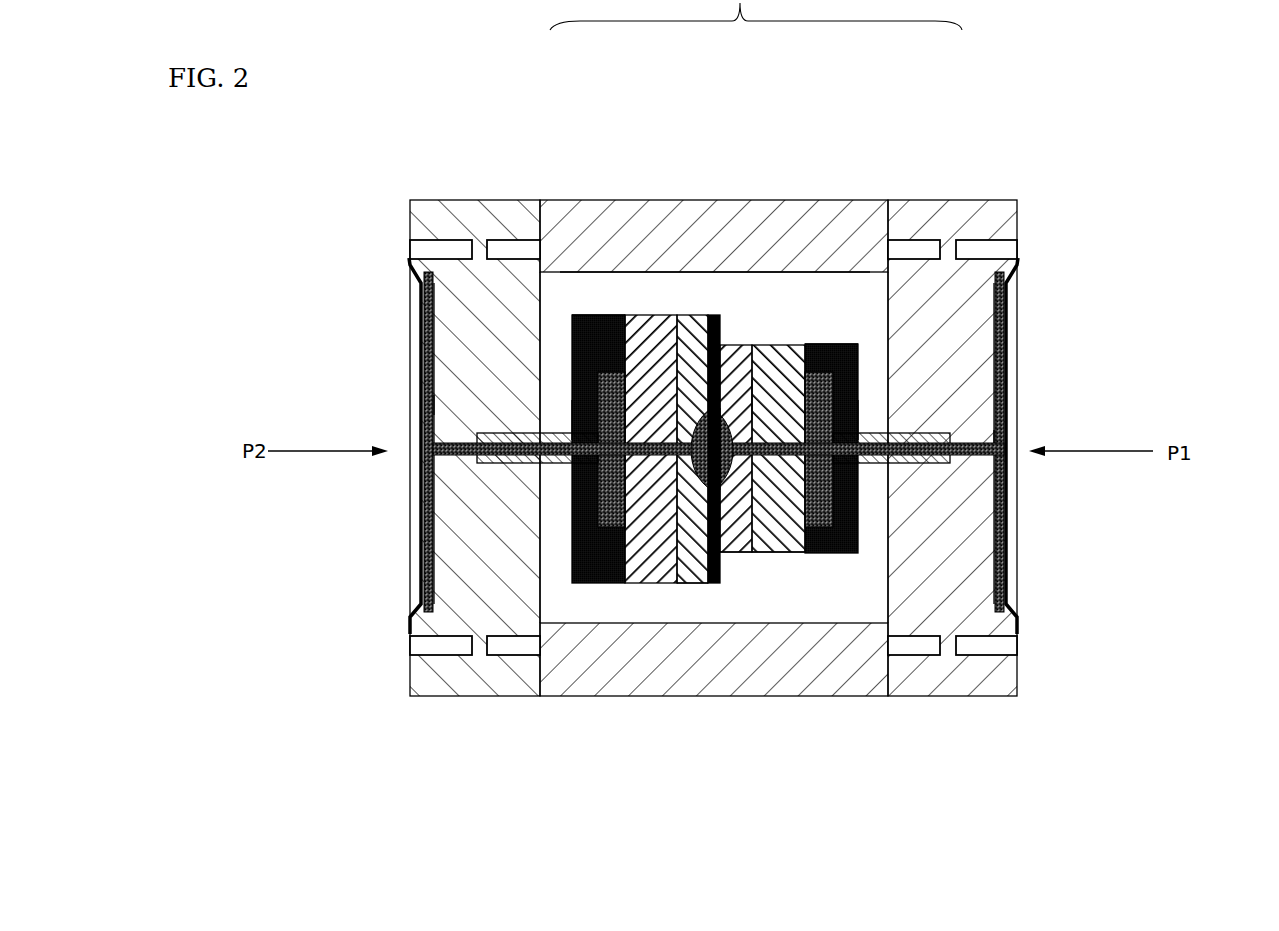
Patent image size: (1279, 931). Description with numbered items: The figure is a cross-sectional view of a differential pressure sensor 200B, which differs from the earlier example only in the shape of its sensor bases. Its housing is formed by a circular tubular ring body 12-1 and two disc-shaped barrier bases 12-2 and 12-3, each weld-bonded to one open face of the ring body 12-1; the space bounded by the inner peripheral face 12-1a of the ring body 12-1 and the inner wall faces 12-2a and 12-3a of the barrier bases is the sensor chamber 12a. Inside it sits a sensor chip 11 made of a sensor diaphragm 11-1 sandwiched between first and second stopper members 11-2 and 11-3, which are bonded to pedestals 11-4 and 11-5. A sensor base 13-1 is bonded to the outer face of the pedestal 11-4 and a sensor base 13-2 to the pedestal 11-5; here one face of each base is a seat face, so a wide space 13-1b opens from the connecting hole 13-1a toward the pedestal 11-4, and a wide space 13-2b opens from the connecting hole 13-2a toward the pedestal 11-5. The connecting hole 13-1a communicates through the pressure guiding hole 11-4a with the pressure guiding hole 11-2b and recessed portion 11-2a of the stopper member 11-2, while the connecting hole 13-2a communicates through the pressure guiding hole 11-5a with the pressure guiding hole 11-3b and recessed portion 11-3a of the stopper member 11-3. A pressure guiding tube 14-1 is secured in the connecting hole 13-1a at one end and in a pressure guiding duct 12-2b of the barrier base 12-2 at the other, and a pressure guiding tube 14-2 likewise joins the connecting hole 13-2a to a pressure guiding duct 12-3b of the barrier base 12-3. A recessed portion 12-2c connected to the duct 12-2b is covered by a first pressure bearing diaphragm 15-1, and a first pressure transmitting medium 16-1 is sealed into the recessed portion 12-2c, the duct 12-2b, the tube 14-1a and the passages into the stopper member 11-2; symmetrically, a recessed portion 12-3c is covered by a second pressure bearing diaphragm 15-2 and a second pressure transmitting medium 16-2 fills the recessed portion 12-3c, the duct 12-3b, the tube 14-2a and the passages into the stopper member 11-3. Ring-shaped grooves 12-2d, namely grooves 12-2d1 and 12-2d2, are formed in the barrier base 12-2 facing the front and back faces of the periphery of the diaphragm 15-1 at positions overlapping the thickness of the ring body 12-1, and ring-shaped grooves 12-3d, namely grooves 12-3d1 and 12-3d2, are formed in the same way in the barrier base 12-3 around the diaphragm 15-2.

The differential pressure sensor 200B is at (1008, 181).
The sensor chip 11 is at (749, 485).
The sensor diaphragm 11-1 is at (713, 583).
The first stopper member 11-2 is at (740, 552).
The recessed portion 11-2a is at (818, 556).
The pressure guiding hole 11-2b is at (748, 344).
The second stopper member 11-3 is at (690, 583).
The recessed portion 11-3a is at (622, 532).
The pressure guiding hole 11-3b is at (705, 405).
The pedestal 11-4 is at (780, 552).
The pressure guiding hole 11-4a is at (757, 400).
The pedestal 11-5 is at (650, 583).
The pressure guiding hole 11-5a is at (652, 430).
The ring body 12-1 is at (675, 199).
The inner peripheral face 12-1a is at (800, 273).
The sensor chamber 12a is at (548, 650).
The barrier base 12-2 is at (1012, 416).
The inner wall face 12-2a is at (1018, 327).
The pressure guiding duct 12-2b is at (1003, 438).
The recessed portion 12-2c is at (1005, 538).
The ring-shaped groove 12-2d is at (1012, 440).
The ring-shaped groove 12-2d1 is at (1010, 250).
The ring-shaped groove 12-2d2 is at (976, 775).
The barrier base 12-3 is at (425, 426).
The inner wall face 12-3a is at (547, 347).
The pressure guiding duct 12-3b is at (426, 527).
The recessed portion 12-3c is at (432, 404).
The ring-shaped groove 12-3d is at (425, 478).
The ring-shaped groove 12-3d1 is at (440, 248).
The ring-shaped groove 12-3d2 is at (520, 250).
The sensor base 13-1 is at (834, 352).
The connecting hole 13-1a is at (843, 412).
The space 13-1b is at (1012, 283).
The sensor base 13-2 is at (598, 327).
The connecting hole 13-2a is at (570, 418).
The space 13-2b is at (585, 325).
The pressure guiding tube 14-1 is at (865, 466).
The tube 14-1a is at (850, 465).
The pressure guiding tube 14-2 is at (475, 465).
The tube 14-2a is at (600, 440).
The first pressure bearing diaphragm 15-1 is at (1015, 388).
The second pressure bearing diaphragm 15-2 is at (433, 470).
The first pressure transmitting medium 16-1 is at (1003, 468).
The second pressure transmitting medium 16-2 is at (420, 462).